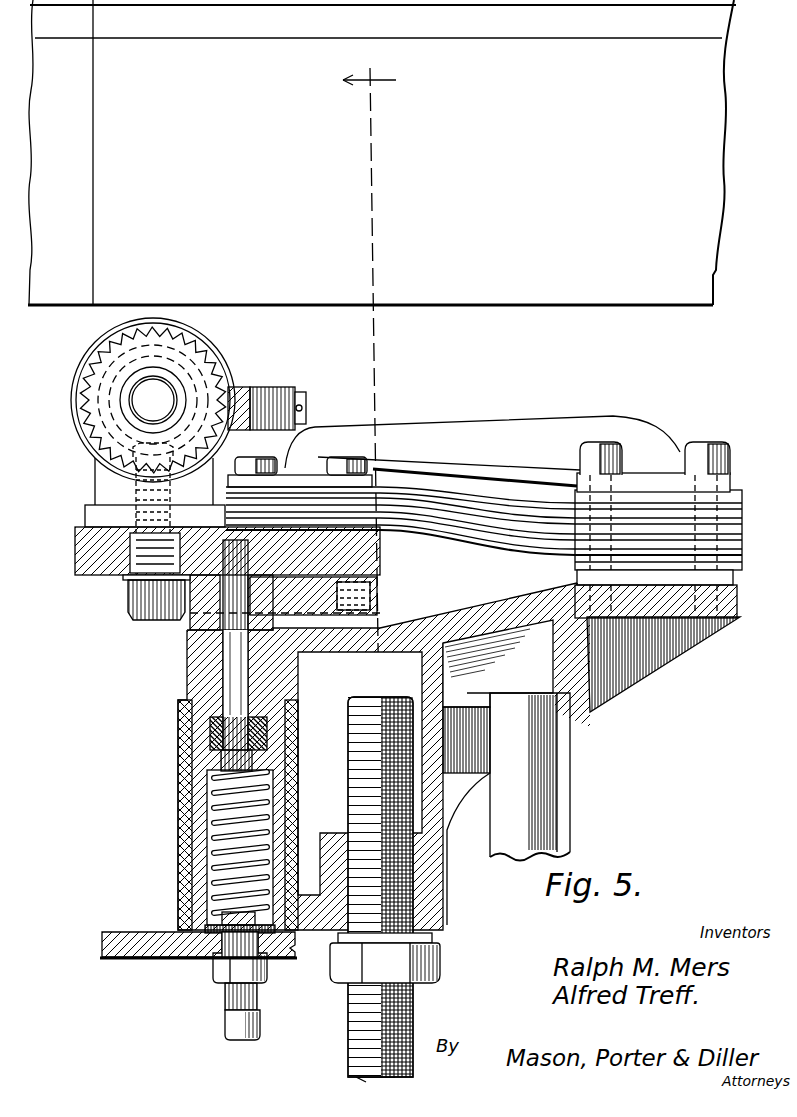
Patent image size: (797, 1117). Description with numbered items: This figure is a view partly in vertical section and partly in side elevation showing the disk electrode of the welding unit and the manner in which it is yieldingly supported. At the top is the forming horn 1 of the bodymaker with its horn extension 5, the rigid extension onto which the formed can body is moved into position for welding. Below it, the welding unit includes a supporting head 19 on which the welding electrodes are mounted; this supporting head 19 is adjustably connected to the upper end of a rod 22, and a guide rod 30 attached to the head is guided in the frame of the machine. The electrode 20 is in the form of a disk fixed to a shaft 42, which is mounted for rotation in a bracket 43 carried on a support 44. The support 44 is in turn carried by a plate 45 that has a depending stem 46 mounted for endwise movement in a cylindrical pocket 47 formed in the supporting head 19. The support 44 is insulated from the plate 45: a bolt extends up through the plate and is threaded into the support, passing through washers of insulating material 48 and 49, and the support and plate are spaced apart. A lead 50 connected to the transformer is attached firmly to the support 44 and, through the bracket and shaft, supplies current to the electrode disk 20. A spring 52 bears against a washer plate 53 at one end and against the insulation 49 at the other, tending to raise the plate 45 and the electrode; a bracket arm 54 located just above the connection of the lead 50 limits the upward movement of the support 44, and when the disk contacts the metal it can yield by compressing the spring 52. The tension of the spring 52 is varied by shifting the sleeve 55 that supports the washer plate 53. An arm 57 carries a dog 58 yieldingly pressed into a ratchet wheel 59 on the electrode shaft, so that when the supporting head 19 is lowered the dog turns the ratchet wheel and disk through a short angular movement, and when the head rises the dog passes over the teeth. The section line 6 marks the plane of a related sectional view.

The forming horn 1 is at (61, 152).
The horn extension 5 is at (382, 152).
The section line 6- 6 is at (369, 576).
The supporting head 19 is at (185, 736).
The electrode 20 is at (232, 362).
The rod 22 is at (348, 785).
The guide rod 30 is at (548, 758).
The shaft 42 is at (137, 400).
The bracket 43 is at (97, 484).
The support 44 is at (85, 556).
The plate 45 is at (378, 594).
The depending stem 46 is at (215, 650).
The cylindrical pocket 47 is at (270, 690).
The washer of insulating material 48 is at (257, 563).
The washer of insulating material 49 is at (270, 733).
The lead 50 is at (484, 530).
The spring 52 is at (222, 801).
The washer plate 53 is at (205, 922).
The bracket arm 54 is at (484, 430).
The sleeve 55 is at (198, 958).
The arm 57 is at (348, 460).
The dog 58 is at (240, 402).
The ratchet wheel 59 is at (205, 362).